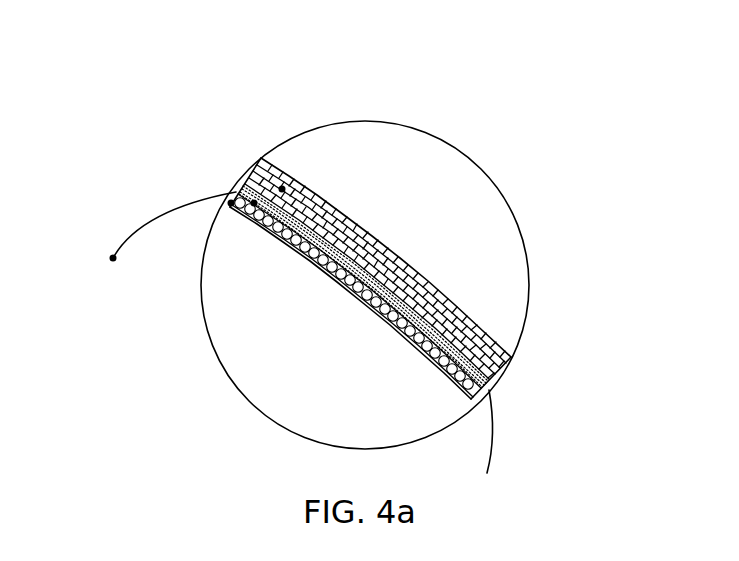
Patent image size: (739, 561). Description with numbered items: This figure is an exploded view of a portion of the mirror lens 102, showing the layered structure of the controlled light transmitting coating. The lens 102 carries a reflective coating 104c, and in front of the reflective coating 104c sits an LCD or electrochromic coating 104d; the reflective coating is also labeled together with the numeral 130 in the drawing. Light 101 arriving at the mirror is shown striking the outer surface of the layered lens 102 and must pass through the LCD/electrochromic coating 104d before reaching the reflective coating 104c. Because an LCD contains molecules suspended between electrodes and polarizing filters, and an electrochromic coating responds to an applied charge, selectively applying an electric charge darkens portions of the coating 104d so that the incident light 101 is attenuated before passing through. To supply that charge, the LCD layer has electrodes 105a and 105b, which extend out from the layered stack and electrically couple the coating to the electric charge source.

The light 101 is at (416, 269).
The lens 102 is at (378, 187).
The reflective coating 104c is at (231, 203).
The contact 130 is at (216, 114).
The LCD/electrochromic coating 104d is at (254, 203).
The electrode 105a is at (492, 443).
The electrode 105b is at (153, 218).